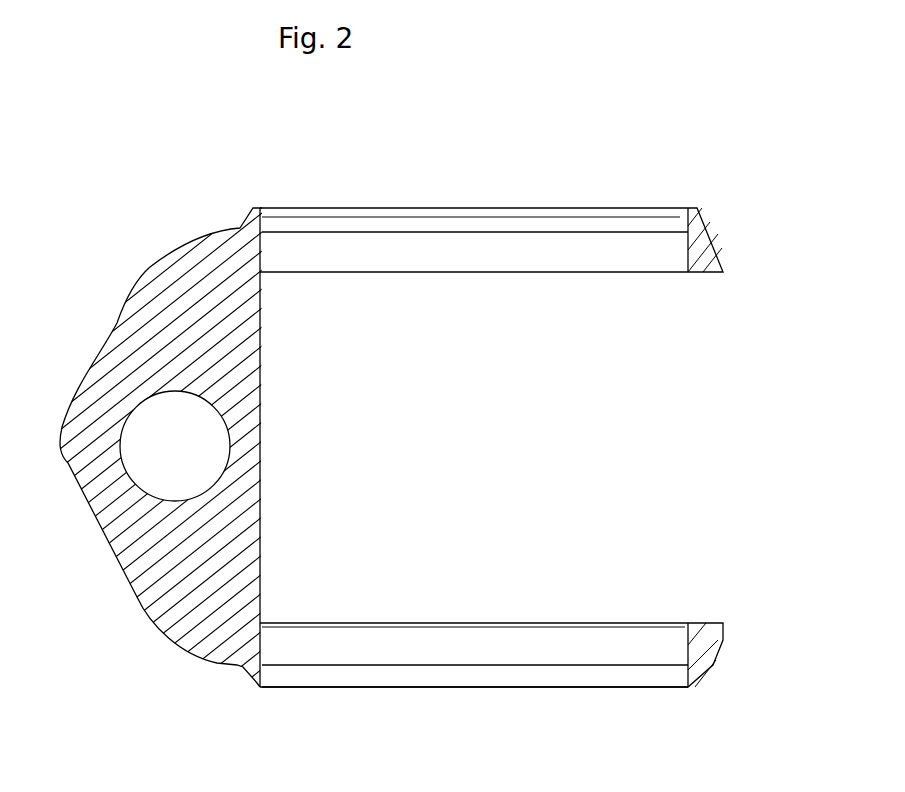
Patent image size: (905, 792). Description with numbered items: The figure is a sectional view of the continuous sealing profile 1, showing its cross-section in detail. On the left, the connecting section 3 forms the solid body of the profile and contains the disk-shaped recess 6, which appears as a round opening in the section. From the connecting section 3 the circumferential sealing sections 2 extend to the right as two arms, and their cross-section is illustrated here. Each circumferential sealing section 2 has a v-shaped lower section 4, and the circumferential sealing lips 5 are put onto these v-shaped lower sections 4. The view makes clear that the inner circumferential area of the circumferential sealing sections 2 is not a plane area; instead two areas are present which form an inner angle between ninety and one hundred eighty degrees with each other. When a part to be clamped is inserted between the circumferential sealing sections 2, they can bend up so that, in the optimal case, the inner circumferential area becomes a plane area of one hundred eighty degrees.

The tool / device 1 is at (182, 191).
The circumferential sealing section 2 is at (700, 240).
The connecting section 3 is at (150, 623).
The v-shaped lower section 4 is at (703, 623).
The circumferential sealing lip 5 is at (703, 680).
The disk-shaped recess 6 is at (185, 481).